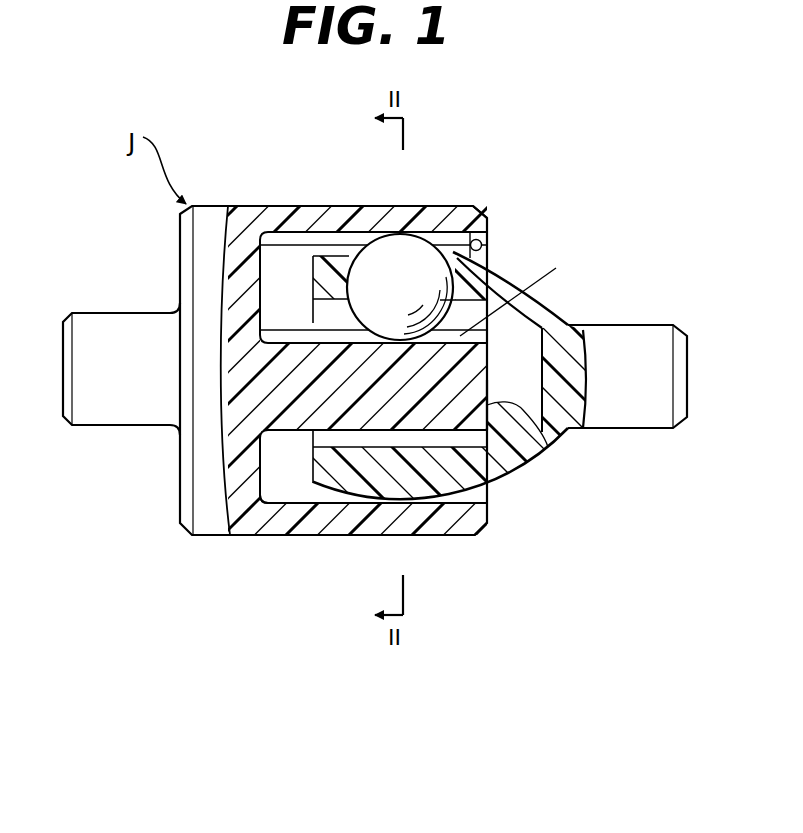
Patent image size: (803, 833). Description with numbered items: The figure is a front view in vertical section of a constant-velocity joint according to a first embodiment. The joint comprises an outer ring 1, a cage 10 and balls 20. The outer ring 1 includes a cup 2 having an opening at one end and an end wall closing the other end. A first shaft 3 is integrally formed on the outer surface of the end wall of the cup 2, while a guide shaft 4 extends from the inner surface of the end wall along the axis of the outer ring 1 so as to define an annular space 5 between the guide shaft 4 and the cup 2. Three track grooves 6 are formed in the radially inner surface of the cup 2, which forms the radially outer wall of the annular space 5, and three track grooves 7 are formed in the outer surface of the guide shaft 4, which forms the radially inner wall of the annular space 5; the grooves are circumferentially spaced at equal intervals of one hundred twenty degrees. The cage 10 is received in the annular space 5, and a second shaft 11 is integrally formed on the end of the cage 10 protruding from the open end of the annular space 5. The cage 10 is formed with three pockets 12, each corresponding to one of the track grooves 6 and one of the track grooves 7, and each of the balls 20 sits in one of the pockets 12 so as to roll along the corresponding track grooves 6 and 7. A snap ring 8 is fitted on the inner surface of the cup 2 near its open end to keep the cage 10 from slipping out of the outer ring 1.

The outer ring 1 is at (236, 206).
The cup 2 is at (284, 206).
The first shaft 3 is at (120, 330).
The guide shaft 4 is at (548, 446).
The annular space 5 is at (287, 478).
The track grooves 6 is at (470, 206).
The track grooves 7 is at (517, 287).
The snap ring 8 is at (488, 241).
The cage 10 is at (550, 298).
The second shaft 11 is at (637, 337).
The pockets 12 is at (357, 250).
The balls 20 is at (397, 250).